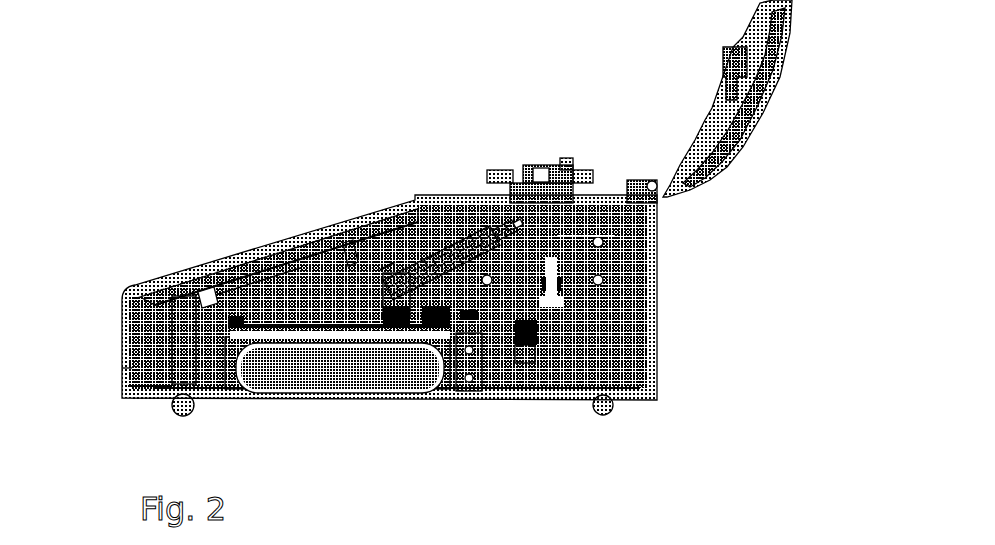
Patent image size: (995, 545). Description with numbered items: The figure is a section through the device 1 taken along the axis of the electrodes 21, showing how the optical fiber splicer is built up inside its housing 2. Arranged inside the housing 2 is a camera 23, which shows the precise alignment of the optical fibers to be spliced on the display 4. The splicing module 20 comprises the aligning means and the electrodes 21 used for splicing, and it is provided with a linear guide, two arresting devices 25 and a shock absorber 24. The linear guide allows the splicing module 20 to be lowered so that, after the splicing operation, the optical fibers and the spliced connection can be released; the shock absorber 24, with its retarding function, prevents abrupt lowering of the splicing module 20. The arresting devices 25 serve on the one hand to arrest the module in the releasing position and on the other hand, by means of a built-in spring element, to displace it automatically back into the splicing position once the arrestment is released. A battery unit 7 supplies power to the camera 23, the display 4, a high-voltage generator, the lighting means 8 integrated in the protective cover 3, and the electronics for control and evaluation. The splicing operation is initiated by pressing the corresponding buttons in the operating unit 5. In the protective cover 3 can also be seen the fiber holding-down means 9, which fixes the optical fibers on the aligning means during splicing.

The device 1 is at (283, 148).
The housing 2 is at (660, 358).
The protective cover 3 is at (723, 170).
The display 4 is at (242, 255).
The operating unit 5 is at (148, 285).
The battery unit 7 is at (312, 372).
The lighting means 8 is at (722, 126).
The fiber holding-down means 9 is at (725, 100).
The splicing module 20 is at (557, 236).
The electrodes 21 is at (485, 200).
The camera 23 is at (403, 297).
The shock absorber 24 is at (520, 330).
The arresting devices 25 is at (513, 350).